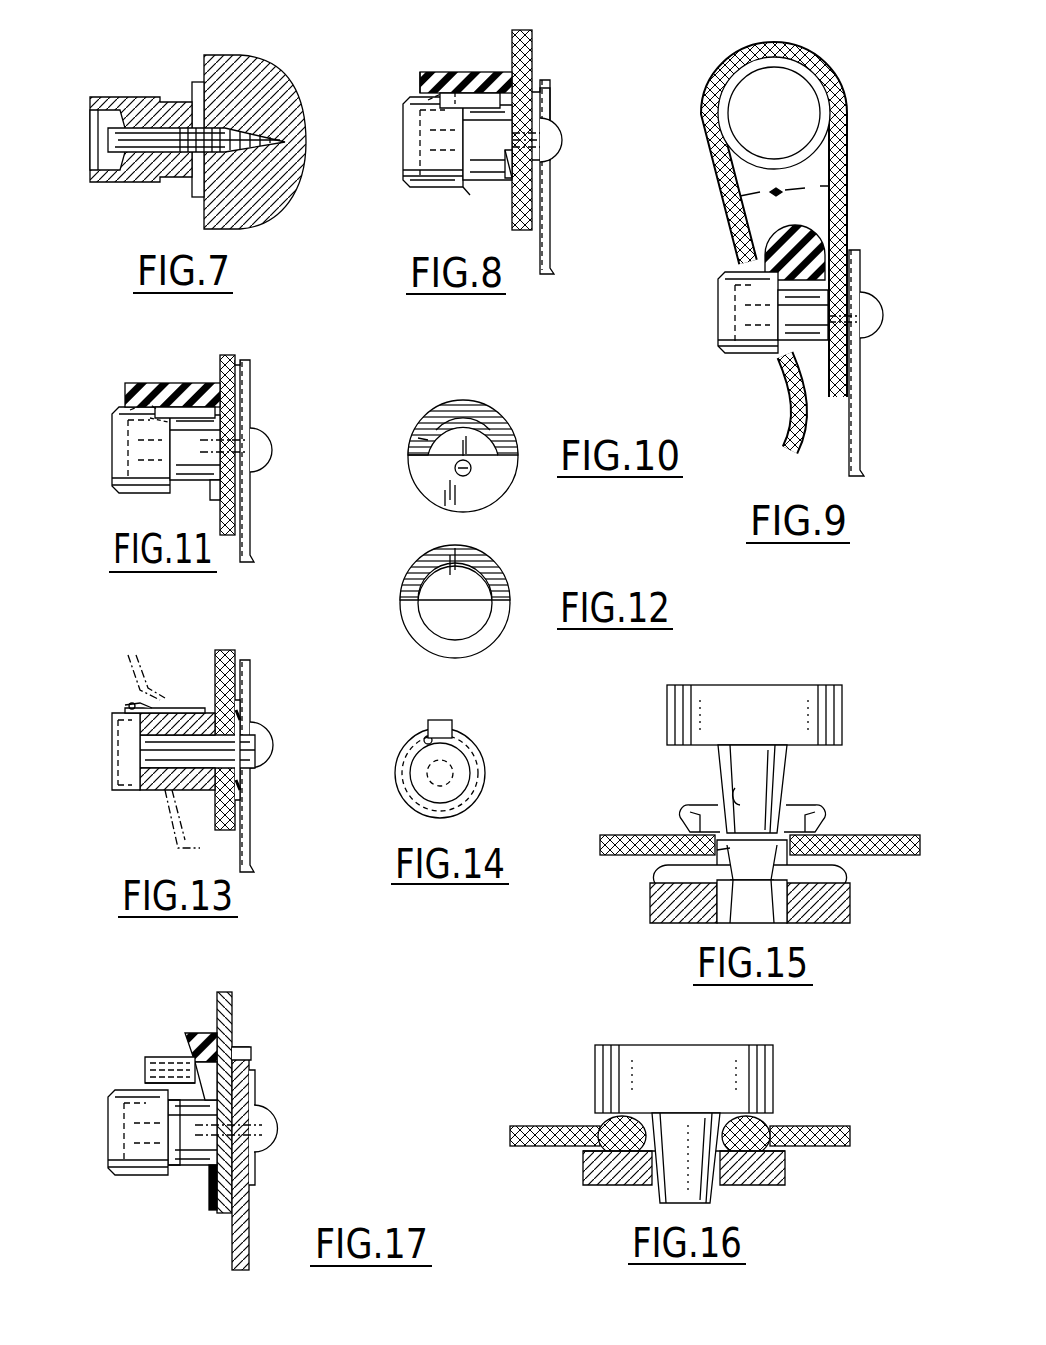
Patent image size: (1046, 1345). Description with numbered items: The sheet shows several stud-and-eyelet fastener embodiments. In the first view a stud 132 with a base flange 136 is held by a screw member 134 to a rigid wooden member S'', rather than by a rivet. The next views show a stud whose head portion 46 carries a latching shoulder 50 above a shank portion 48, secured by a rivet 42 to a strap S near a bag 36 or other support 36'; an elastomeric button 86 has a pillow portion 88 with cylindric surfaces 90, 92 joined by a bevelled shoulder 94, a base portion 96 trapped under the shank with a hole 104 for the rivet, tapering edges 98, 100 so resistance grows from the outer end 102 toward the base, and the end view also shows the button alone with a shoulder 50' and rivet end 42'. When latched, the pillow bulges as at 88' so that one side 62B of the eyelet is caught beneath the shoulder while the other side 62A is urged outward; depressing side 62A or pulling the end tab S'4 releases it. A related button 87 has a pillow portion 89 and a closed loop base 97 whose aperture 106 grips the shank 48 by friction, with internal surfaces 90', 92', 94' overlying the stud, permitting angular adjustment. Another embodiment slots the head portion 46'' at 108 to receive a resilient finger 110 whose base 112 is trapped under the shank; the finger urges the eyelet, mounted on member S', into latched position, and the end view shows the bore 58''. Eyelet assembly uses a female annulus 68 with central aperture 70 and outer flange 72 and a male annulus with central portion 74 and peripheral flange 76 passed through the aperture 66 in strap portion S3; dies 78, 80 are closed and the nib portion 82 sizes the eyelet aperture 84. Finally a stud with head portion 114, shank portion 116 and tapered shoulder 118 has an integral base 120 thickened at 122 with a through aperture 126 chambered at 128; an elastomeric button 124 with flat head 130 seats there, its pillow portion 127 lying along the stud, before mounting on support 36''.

In FIG. 7, the screw member 134 is at (112, 145).
In FIG. 7, the stud 132 is at (138, 182).
In FIG. 7, the base flange 136 is at (200, 192).
In FIG. 7, the wooden member S'' is at (282, 204).
In FIG. 8, the strap S is at (540, 123).
In FIG. 13, the strap S is at (241, 729).
In FIG. 8, the panel 36' is at (571, 177).
In FIG. 9, the panel 36' is at (881, 363).
In FIG. 8, the elastomeric button 86 is at (538, 80).
In FIG. 10, the elastomeric button 86 is at (432, 502).
In FIG. 8, the ball 42' is at (540, 140).
In FIG. 8, the tapering edge 98 is at (400, 137).
In FIG. 10, the tapering edge 98 is at (418, 447).
In FIG. 8, the cylindric surface 90 is at (405, 97).
In FIG. 8, the cylindric surface 92 is at (533, 132).
In FIG. 8, the pillow portion 88 is at (466, 61).
In FIG. 10, the pillow portion 88 is at (489, 410).
In FIG. 8, the bevelled shoulder 94 is at (470, 69).
In FIG. 8, the outer end 102 is at (418, 82).
In FIG. 10, the outer end 102 is at (432, 414).
In FIG. 8, the base portion 96 is at (518, 178).
In FIG. 10, the base portion 96 is at (498, 490).
In FIG. 8, the stud 50' is at (459, 205).
In FIG. 9, the side of the eyelet 62A is at (735, 252).
In FIG. 9, the bulge of pillow portion 88' is at (795, 239).
In FIG. 9, the head portion 46 is at (728, 328).
In FIG. 11, the head portion 46 is at (180, 461).
In FIG. 9, the latching shoulder 50 is at (810, 339).
In FIG. 9, the side of the eyelet 62B is at (780, 378).
In FIG. 9, the end tab S'4 is at (756, 446).
In FIG. 10, the tapering edge 100 is at (512, 440).
In FIG. 10, the hole 104 is at (458, 470).
In FIG. 12, the closed loop base portion 97 is at (508, 620).
In FIG. 11, the closed loop base portion 97 is at (215, 500).
In FIG. 12, the aperture 106 is at (432, 625).
In FIG. 12, the pillow portion 89 is at (420, 558).
In FIG. 11, the pillow portion 89 is at (145, 383).
In FIG. 11, the button 87 is at (242, 390).
In FIG. 11, the shank portion 48 is at (192, 480).
In FIG. 11, the cylindric surface 92' is at (185, 378).
In FIG. 11, the cylindric surface 90' is at (111, 398).
In FIG. 11, the cylindric surface 94' is at (116, 430).
In FIG. 13, the bag 36 is at (267, 766).
In FIG. 13, the rivet 42 is at (225, 745).
In FIG. 13, the base portion 112 is at (238, 725).
In FIG. 13, the head portion 46'' is at (155, 780).
In FIG. 14, the head portion 46'' is at (465, 773).
In FIG. 13, the slot 108 is at (112, 718).
In FIG. 14, the slot 108 is at (425, 743).
In FIG. 13, the resilient finger 110 is at (125, 703).
In FIG. 14, the resilient finger 110 is at (452, 726).
In FIG. 13, the member S' is at (132, 660).
In FIG. 14, the bore 58'' is at (404, 790).
In FIG. 15, the die member 78 is at (842, 718).
In FIG. 16, the die member 78 is at (770, 1068).
In FIG. 15, the nib portion 82 is at (765, 780).
In FIG. 16, the nib portion 82 is at (668, 1188).
In FIG. 15, the central aperture 70 is at (732, 790).
In FIG. 15, the female annulus 68 is at (820, 806).
In FIG. 16, the female annulus 68 is at (770, 1124).
In FIG. 15, the outer flange 72 is at (690, 822).
In FIG. 15, the free end portion S3 is at (895, 838).
In FIG. 16, the free end portion S3 is at (835, 1124).
In FIG. 15, the aperture 66 is at (748, 850).
In FIG. 15, the central portion 74 is at (735, 860).
In FIG. 15, the peripheral flange 76 is at (836, 875).
In FIG. 16, the peripheral flange 76 is at (787, 1155).
In FIG. 15, the die member 80 is at (838, 917).
In FIG. 16, the die member 80 is at (770, 1183).
In FIG. 16, the aperture 84 is at (690, 1130).
In FIG. 17, the support 36'' is at (254, 1116).
In FIG. 17, the chamber 128 is at (253, 1065).
In FIG. 17, the enlarged flat head 130 is at (252, 1055).
In FIG. 17, the tapered shoulder 118 is at (113, 1118).
In FIG. 17, the head portion 114 is at (138, 1178).
In FIG. 17, the shank portion 116 is at (182, 1170).
In FIG. 17, the base 120 is at (212, 1200).
In FIG. 17, the base portion 122 is at (192, 1033).
In FIG. 17, the elastomeric button 124 is at (156, 1045).
In FIG. 17, the through aperture 126 is at (143, 1068).
In FIG. 17, the pillow portion 127 is at (150, 1081).